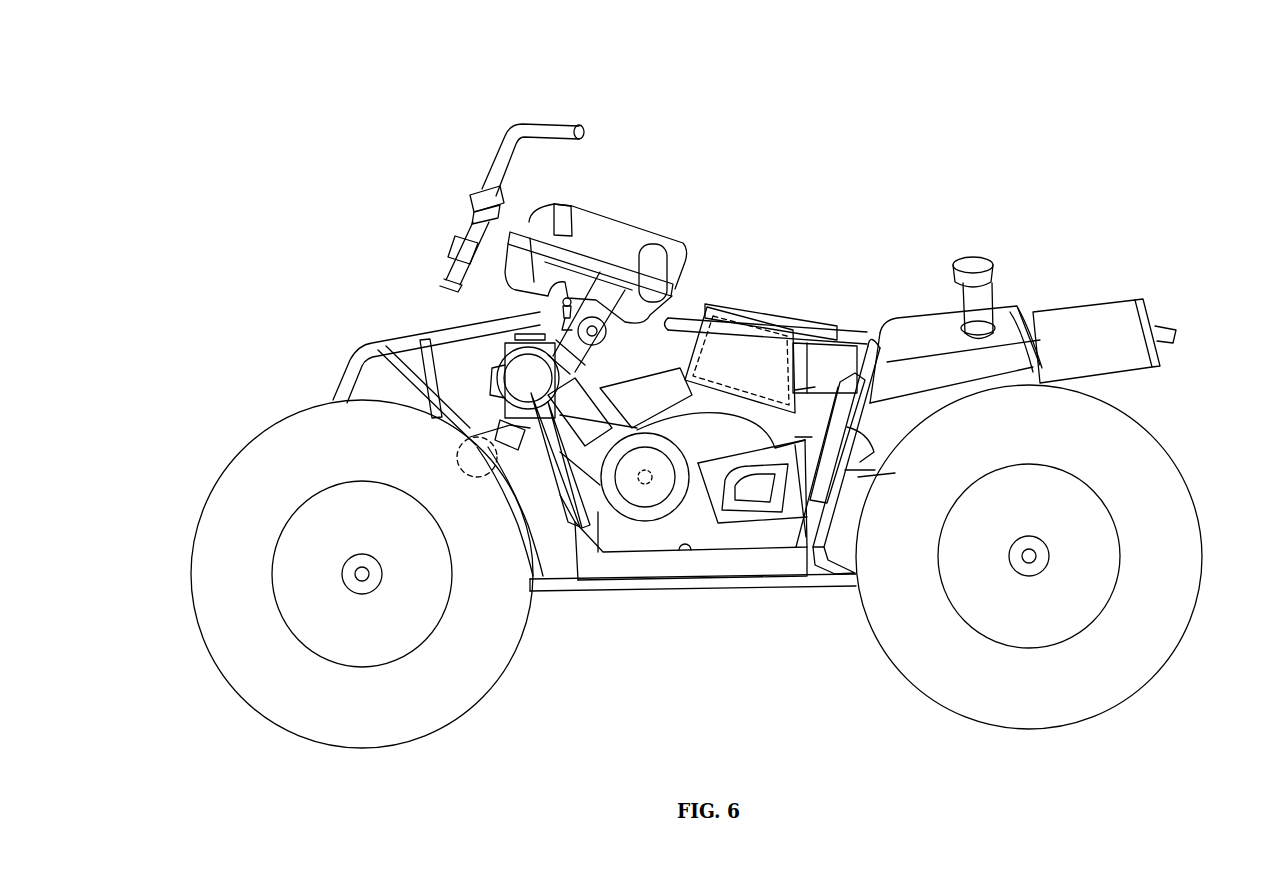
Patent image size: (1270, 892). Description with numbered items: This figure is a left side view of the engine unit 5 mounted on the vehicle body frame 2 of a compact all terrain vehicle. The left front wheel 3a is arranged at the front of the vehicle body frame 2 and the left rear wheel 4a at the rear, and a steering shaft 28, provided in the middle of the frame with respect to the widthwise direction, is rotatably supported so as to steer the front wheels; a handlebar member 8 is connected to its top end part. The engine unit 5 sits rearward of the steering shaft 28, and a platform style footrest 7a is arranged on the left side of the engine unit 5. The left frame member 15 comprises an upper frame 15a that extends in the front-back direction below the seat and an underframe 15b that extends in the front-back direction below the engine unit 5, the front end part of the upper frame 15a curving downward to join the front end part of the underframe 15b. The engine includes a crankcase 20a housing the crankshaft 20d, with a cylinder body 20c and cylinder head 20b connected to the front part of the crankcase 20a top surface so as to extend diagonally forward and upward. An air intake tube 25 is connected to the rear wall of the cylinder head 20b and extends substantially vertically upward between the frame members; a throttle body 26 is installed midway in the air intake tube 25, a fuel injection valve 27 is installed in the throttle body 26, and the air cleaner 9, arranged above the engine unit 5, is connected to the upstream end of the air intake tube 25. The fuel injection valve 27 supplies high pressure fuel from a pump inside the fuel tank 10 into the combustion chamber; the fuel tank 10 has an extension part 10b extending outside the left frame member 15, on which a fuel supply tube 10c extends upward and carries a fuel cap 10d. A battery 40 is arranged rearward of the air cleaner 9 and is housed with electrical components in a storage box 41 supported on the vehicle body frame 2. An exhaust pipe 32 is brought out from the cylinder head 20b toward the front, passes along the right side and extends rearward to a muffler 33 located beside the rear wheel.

The vehicle body frame 2 is at (745, 600).
The left front wheel 3a is at (276, 416).
The left rear wheel 4a is at (1186, 466).
The engine unit 5 is at (476, 362).
The left footrest 7a is at (675, 556).
The handlebar member 8 is at (562, 122).
The air cleaner 9 is at (667, 232).
The fuel tank 10 is at (917, 312).
The extension part 10b is at (1037, 315).
The fuel supply tube 10c is at (995, 300).
The fuel cap 10d is at (968, 258).
The frame member 15 is at (350, 362).
The upper frame 15a is at (853, 340).
The underframe 15b is at (787, 588).
The crankcase 20a is at (670, 434).
The cylinder head 20b is at (637, 405).
The cylinder body 20c is at (577, 460).
The crankshaft 20d is at (645, 482).
The air intake tube 25 is at (598, 356).
The throttle body 26 is at (608, 337).
The fuel injection valve 27 is at (546, 309).
The steering shaft 28 is at (449, 265).
The exhaust pipe 32 is at (470, 425).
The muffler 33 is at (1085, 308).
The battery 40 is at (738, 308).
The storage box 41 is at (688, 350).